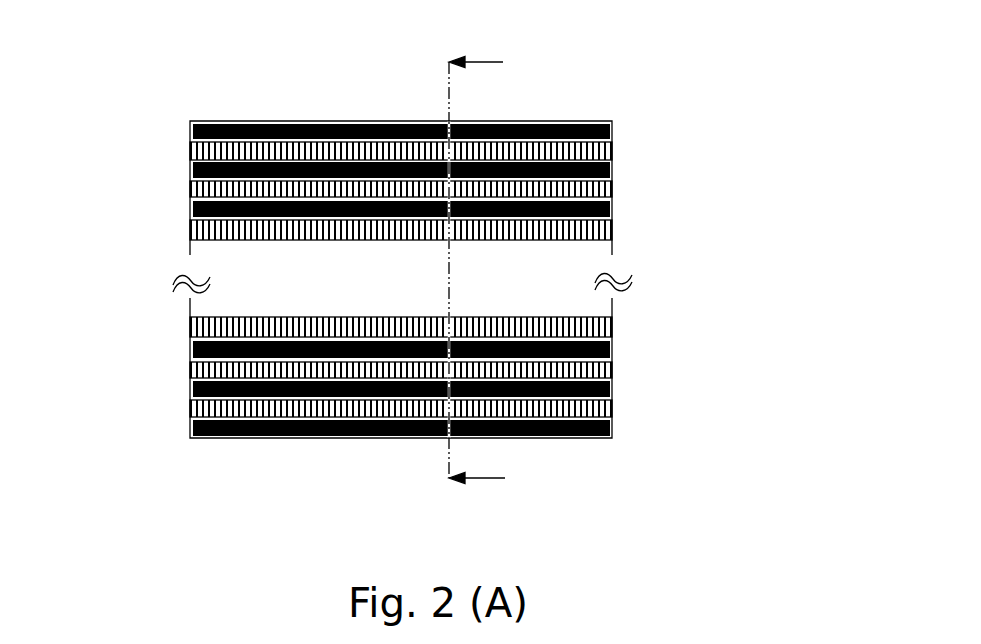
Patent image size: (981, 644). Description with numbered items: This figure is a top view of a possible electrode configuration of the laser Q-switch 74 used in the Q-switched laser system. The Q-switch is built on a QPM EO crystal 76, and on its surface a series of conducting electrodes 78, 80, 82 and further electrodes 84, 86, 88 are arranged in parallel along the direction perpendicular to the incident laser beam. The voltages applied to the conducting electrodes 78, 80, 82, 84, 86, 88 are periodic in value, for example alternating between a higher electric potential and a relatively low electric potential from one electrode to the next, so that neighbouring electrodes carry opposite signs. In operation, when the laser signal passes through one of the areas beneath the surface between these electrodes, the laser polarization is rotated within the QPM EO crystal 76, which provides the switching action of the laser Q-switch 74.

The laser Q-switch 74 is at (341, 261).
The QPM EO crystal 76 is at (200, 150).
The conducting electrode 78 is at (318, 133).
The conducting electrode 80 is at (227, 213).
The conducting electrode 82 is at (228, 168).
The conducting electrode 84 is at (210, 350).
The conducting electrode 86 is at (245, 425).
The conducting electrode 88 is at (232, 387).